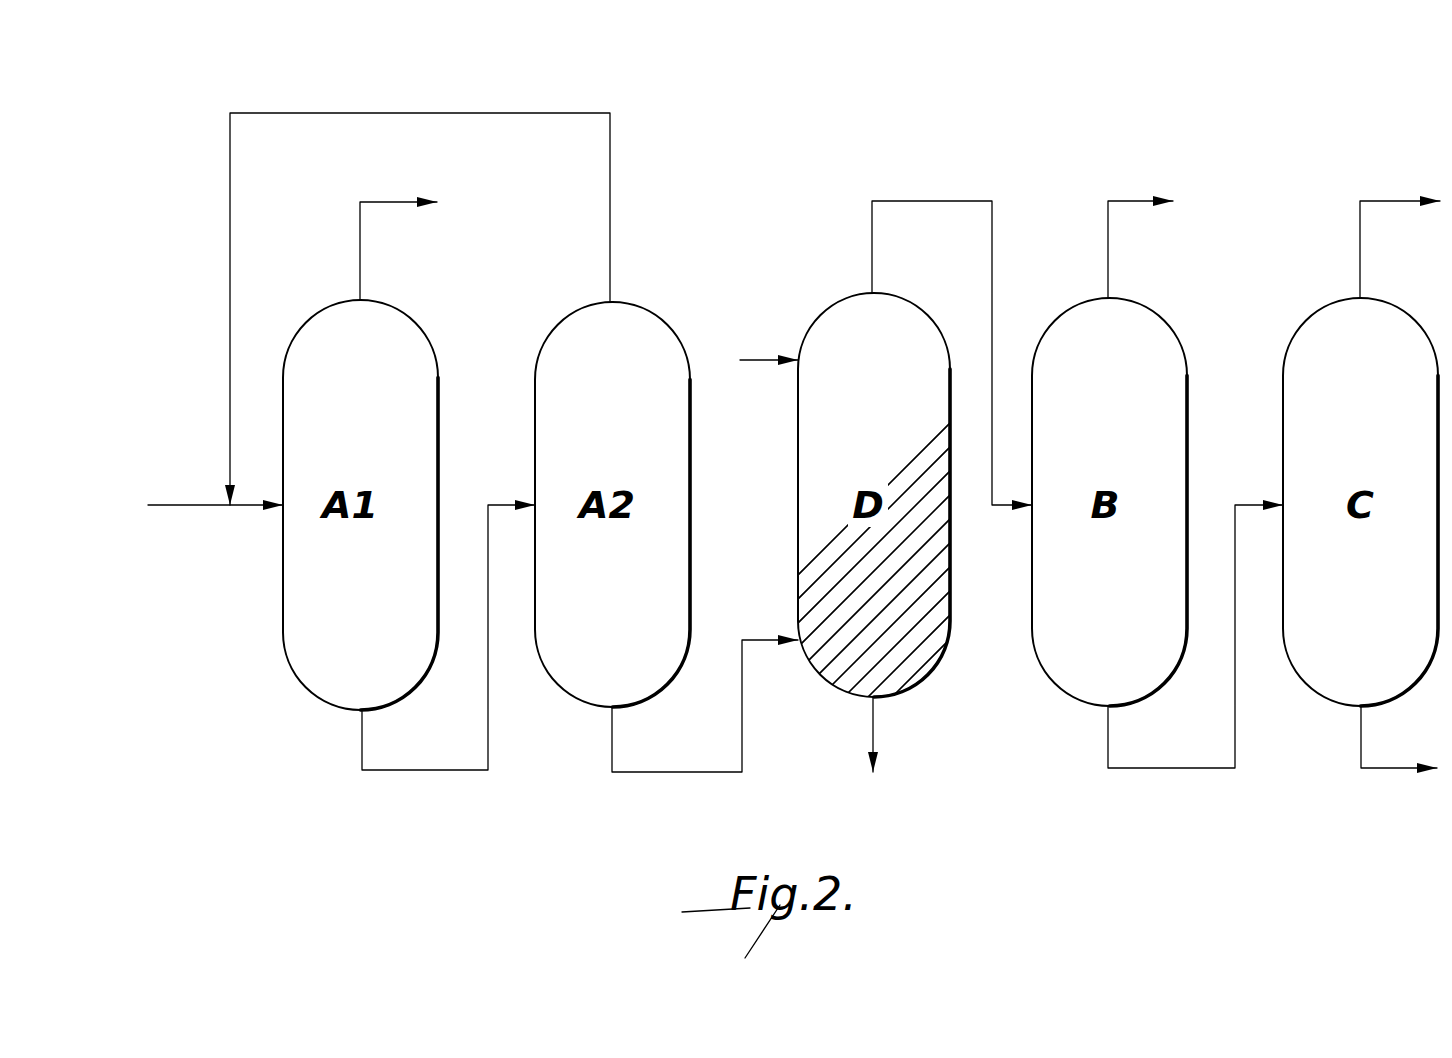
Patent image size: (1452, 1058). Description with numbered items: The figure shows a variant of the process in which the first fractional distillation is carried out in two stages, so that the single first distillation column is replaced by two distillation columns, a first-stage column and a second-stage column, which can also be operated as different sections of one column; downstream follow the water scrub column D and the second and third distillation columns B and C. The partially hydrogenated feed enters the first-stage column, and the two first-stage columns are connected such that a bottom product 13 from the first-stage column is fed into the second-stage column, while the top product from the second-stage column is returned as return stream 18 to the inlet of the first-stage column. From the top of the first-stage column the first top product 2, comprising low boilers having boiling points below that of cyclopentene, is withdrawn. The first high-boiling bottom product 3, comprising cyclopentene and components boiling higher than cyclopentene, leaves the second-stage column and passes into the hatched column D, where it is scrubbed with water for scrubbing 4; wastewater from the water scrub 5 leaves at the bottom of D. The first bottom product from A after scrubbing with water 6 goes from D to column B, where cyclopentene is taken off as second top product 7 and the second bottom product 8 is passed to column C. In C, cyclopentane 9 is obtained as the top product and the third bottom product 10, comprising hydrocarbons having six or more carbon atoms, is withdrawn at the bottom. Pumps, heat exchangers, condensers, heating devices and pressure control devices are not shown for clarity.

The first top product 2 is at (395, 200).
The first high-boiling bottom product 3 is at (655, 772).
The water for scrubbing 4 is at (757, 358).
The wastewater from the water scrub 5 is at (875, 731).
The first bottom product from A after scrubbing with water 6 is at (918, 201).
The cyclopentene as second top product 7 is at (1122, 200).
The second bottom product 8 is at (1160, 769).
The cyclopentane 9 is at (1378, 200).
The third bottom product 10 is at (1380, 770).
The bottom product from A1 13 is at (390, 771).
The return stream 18 is at (385, 113).